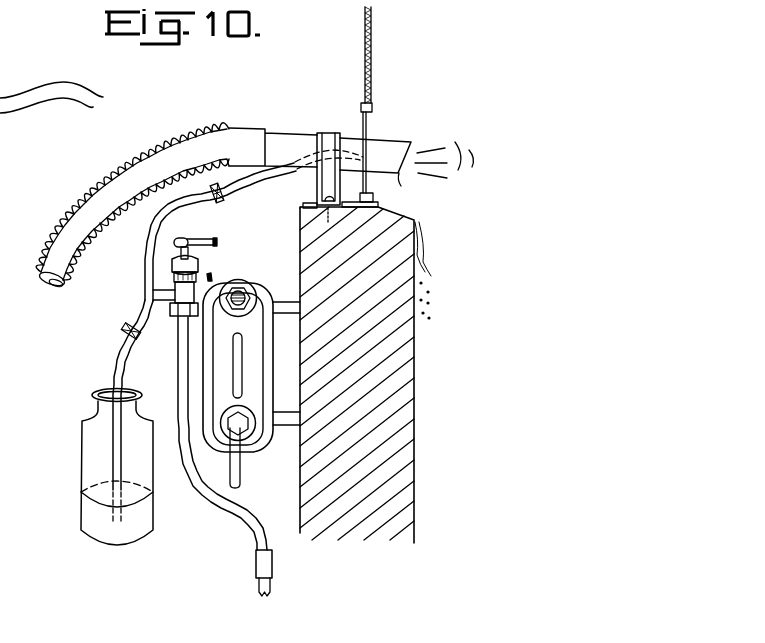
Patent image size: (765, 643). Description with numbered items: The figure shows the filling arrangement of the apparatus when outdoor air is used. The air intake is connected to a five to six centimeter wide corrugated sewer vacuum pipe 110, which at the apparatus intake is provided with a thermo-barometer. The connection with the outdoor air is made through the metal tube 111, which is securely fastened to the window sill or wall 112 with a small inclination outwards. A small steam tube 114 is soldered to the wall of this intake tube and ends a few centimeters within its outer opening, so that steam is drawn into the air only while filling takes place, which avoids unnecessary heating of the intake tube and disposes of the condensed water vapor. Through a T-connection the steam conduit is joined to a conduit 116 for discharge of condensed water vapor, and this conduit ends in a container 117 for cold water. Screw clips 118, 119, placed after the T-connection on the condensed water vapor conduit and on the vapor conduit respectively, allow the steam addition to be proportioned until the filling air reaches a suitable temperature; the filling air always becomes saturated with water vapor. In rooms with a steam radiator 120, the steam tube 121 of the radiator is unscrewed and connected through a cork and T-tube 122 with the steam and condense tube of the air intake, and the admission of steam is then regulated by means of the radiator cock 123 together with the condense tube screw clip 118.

The corrugated sewer vacuum pipe 110 is at (66, 212).
The metal tube 111 is at (292, 148).
The window sill or wall 112 is at (400, 433).
The liquid supply tube 114 is at (268, 179).
The conduit for discharge of condensed water vapor 116 is at (116, 363).
The container for cold water 117 is at (90, 452).
The screw clip 118 is at (126, 326).
The screw clip 119 is at (210, 191).
The steam radiator 120 is at (260, 274).
The steam tube of the radiator 121 is at (180, 372).
The T-tube 122 is at (180, 293).
The radiator cock 123 is at (207, 233).